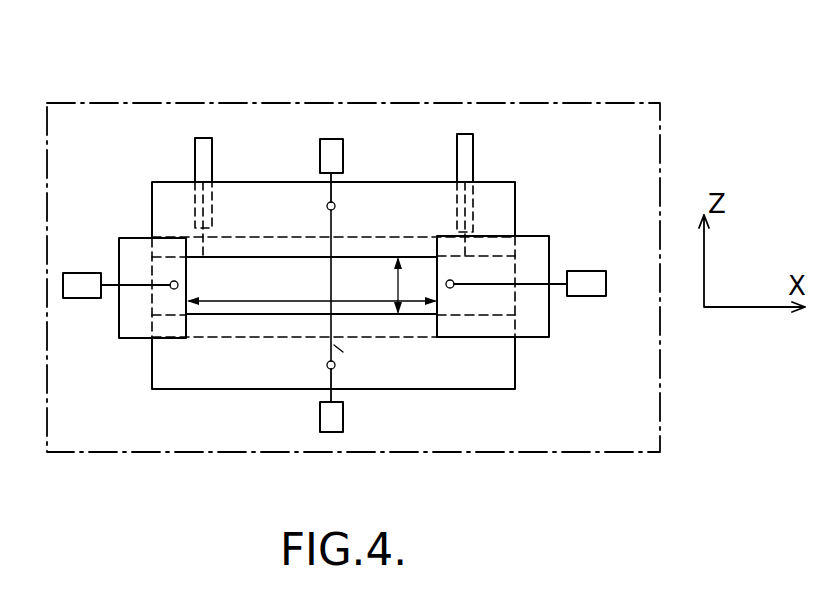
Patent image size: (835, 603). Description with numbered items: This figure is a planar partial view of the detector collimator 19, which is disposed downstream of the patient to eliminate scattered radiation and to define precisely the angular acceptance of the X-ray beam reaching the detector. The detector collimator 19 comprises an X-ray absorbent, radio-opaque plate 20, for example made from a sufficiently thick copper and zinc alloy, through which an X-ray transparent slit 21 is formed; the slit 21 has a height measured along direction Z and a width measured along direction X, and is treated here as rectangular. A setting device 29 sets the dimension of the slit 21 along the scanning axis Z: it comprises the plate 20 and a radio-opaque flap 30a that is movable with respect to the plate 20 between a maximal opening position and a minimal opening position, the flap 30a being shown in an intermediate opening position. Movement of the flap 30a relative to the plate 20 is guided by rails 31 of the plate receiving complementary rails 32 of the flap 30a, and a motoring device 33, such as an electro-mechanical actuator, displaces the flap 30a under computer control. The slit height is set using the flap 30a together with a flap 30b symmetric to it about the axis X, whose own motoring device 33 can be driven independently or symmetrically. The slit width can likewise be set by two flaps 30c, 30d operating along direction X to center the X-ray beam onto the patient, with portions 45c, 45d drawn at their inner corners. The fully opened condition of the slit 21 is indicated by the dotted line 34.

The detector collimator 19 is at (391, 233).
The X-ray absorbent plate 20 is at (587, 105).
The slit 21 is at (250, 267).
The setting device 29 is at (364, 147).
The flap 30a is at (280, 201).
The flap 30b is at (450, 368).
The flap 30c is at (135, 325).
The flap 30d is at (538, 305).
The rails 31 is at (203, 153).
The complementary rails 32 is at (200, 207).
The motoring device 33 is at (332, 158).
The dotted line 34 is at (277, 340).
The left engagement portion 45c is at (180, 322).
The right engagement portion 45d is at (457, 307).